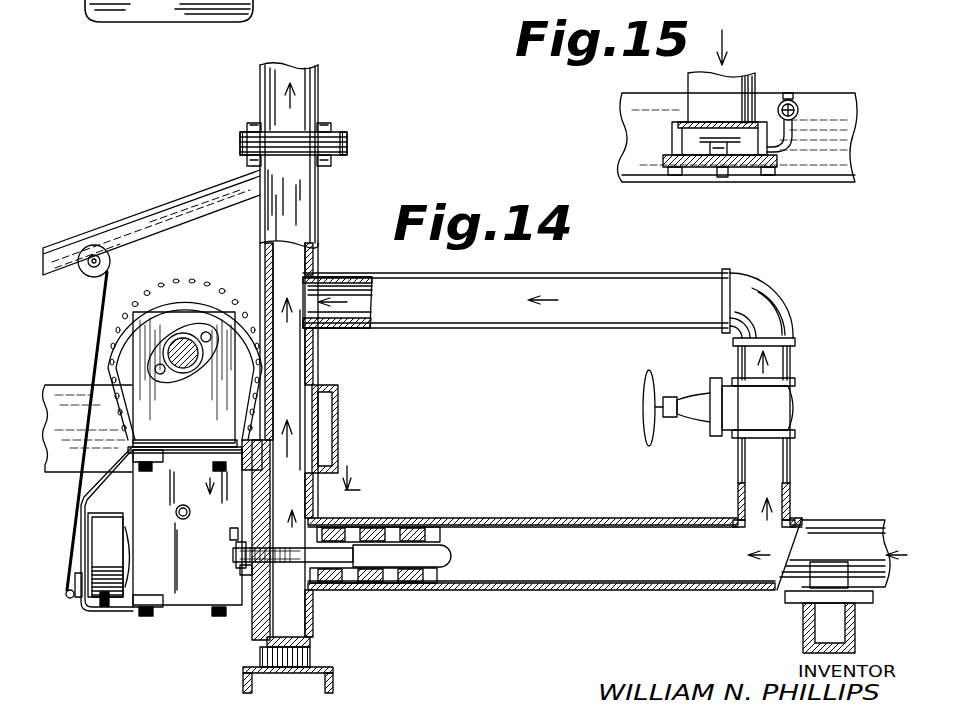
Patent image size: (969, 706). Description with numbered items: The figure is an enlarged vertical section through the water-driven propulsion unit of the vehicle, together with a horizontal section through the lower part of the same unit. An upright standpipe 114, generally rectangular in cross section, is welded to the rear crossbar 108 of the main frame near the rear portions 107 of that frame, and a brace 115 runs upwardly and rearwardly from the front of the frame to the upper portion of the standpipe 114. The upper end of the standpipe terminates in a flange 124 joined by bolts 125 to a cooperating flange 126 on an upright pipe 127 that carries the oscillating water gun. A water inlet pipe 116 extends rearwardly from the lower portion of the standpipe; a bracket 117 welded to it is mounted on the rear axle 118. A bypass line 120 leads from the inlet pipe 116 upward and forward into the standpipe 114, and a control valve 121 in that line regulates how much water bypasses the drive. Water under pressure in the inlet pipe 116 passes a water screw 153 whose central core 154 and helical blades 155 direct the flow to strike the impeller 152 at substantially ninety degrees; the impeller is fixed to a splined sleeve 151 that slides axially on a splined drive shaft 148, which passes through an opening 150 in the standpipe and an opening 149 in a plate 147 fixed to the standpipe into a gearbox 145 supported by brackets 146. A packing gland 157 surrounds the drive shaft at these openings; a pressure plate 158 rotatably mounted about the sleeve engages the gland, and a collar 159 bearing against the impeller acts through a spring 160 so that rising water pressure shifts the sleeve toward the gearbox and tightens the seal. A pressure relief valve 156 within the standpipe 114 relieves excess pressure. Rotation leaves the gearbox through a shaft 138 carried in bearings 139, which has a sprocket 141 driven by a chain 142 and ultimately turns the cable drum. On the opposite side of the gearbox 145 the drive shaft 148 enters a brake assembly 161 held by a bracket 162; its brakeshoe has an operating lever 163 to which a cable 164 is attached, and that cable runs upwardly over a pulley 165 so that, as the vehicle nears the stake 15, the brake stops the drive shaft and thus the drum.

In FIG. 14, the stake 15 is at (284, 477).
In FIG. 14, the rear portions of the main frame 107 is at (70, 393).
In FIG. 14, the rear crossbar 108 is at (337, 403).
In FIG. 14, the standpipe 114 is at (298, 350).
In FIG. 15, the standpipe 114 is at (682, 125).
In FIG. 14, the brace 115 is at (147, 223).
In FIG. 14, the water inlet pipe 116 is at (540, 590).
In FIG. 15, the water inlet pipe 116 is at (757, 87).
In FIG. 14, the bracket 117 is at (833, 577).
In FIG. 14, the rear axle 118 is at (803, 632).
In FIG. 14, the bypass line 120 is at (462, 322).
In FIG. 14, the control valve 121 is at (710, 418).
In FIG. 14, the flange 124 is at (348, 150).
In FIG. 14, the bolts 125 is at (333, 133).
In FIG. 14, the cooperating flange 126 is at (243, 140).
In FIG. 14, the upright pipe 127 is at (275, 76).
In FIG. 14, the shaft 138 is at (197, 377).
In FIG. 14, the bearings 139 is at (184, 335).
In FIG. 14, the sprocket 141 is at (240, 272).
In FIG. 14, the chain 142 is at (184, 279).
In FIG. 14, the gearbox 145 is at (177, 605).
In FIG. 14, the brackets 146 is at (235, 614).
In FIG. 14, the plate 147 is at (243, 437).
In FIG. 15, the plate 147 is at (698, 170).
In FIG. 14, the splined drive shaft 148 is at (243, 554).
In FIG. 14, the opening 149 is at (247, 547).
In FIG. 14, the opening 150 is at (260, 573).
In FIG. 14, the splined sleeve 151 is at (402, 557).
In FIG. 14, the impeller 152 is at (330, 588).
In FIG. 14, the water screw 153 is at (428, 503).
In FIG. 14, the central core 154 is at (437, 537).
In FIG. 14, the helical blades 155 is at (393, 590).
In FIG. 15, the pressure relief valve 156 is at (797, 108).
In FIG. 14, the packing gland 157 is at (243, 572).
In FIG. 14, the pressure plate 158 is at (243, 531).
In FIG. 14, the collar 159 is at (313, 522).
In FIG. 15, the collar 159 is at (707, 138).
In FIG. 14, the spring 160 is at (294, 607).
In FIG. 15, the spring 160 is at (738, 152).
In FIG. 14, the brake assembly 161 is at (105, 606).
In FIG. 14, the bracket 162 is at (127, 613).
In FIG. 14, the operating lever 163 is at (73, 598).
In FIG. 14, the cable 164 is at (70, 501).
In FIG. 14, the pulley 165 is at (92, 276).